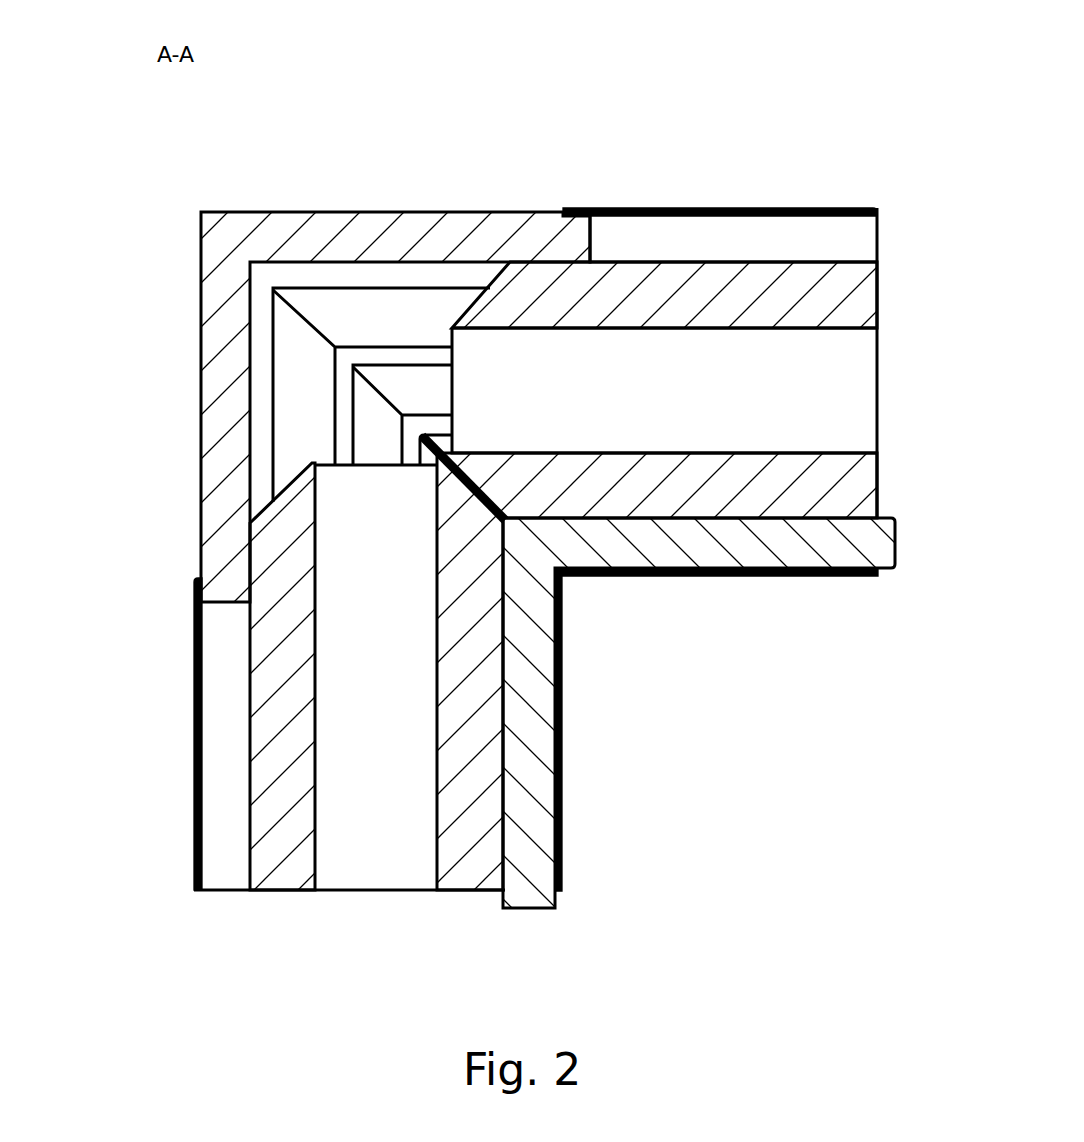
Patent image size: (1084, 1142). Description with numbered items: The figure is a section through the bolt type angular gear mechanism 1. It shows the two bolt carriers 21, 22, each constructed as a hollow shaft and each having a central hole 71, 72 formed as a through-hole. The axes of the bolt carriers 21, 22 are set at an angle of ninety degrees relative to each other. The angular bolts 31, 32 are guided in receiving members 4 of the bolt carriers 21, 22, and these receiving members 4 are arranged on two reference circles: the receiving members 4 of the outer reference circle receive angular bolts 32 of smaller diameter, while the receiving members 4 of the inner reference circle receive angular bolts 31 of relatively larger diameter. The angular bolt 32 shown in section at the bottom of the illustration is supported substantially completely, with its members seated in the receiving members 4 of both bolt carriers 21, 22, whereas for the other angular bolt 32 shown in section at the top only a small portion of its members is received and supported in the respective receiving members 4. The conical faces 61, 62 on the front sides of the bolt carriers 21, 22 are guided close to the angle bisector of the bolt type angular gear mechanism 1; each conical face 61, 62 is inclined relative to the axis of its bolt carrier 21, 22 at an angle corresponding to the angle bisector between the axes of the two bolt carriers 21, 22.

The bolt type angular gear mechanism 1 is at (856, 148).
The receiving members 4 is at (758, 243).
The bolt carrier 21 is at (698, 210).
The bolt carrier 22 is at (195, 705).
The angular bolt 31 is at (338, 283).
The angular bolt 32 is at (202, 213).
The conical face 61 is at (491, 283).
The conical face 62 is at (267, 508).
The central hole 71 is at (582, 327).
The central hole 72 is at (440, 780).